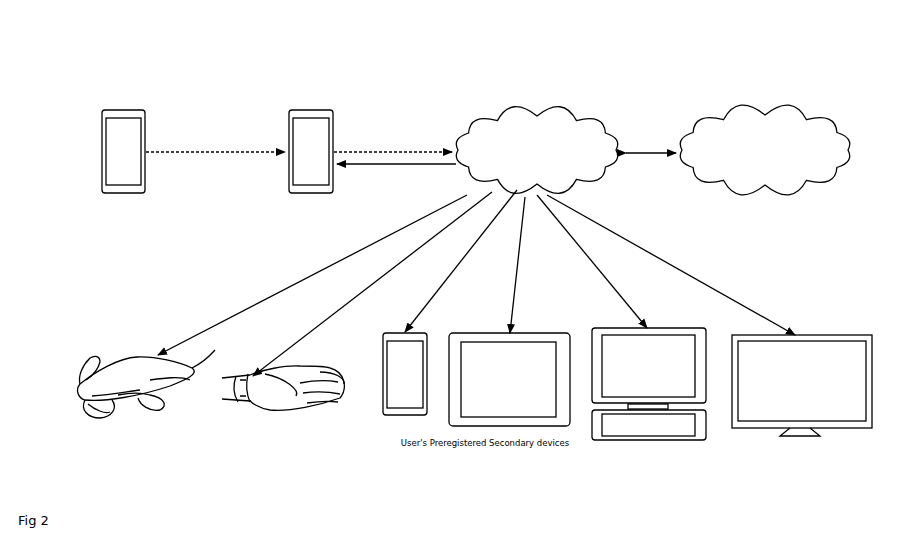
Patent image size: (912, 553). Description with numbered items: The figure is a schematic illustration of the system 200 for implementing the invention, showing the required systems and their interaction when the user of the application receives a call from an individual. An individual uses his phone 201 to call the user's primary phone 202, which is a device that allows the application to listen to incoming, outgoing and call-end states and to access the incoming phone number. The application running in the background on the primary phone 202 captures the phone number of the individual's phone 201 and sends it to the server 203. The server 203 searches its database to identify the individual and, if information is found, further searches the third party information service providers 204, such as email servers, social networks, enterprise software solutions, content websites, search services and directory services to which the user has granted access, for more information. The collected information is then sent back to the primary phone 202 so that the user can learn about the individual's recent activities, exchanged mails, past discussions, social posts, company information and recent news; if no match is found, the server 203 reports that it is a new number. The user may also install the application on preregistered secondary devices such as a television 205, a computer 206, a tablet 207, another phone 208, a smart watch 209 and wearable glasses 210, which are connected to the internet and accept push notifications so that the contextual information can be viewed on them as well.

The system 200 is at (87, 56).
The individual's phone 201 is at (146, 112).
The user's primary phone 202 is at (334, 112).
The server 203 is at (612, 114).
The third party information service providers 204 is at (828, 111).
The secondary device 205 is at (815, 338).
The secondary device 206 is at (707, 330).
The secondary device 207 is at (571, 336).
The secondary device 208 is at (428, 335).
The secondary device 209 is at (326, 368).
The secondary device 210 is at (161, 379).